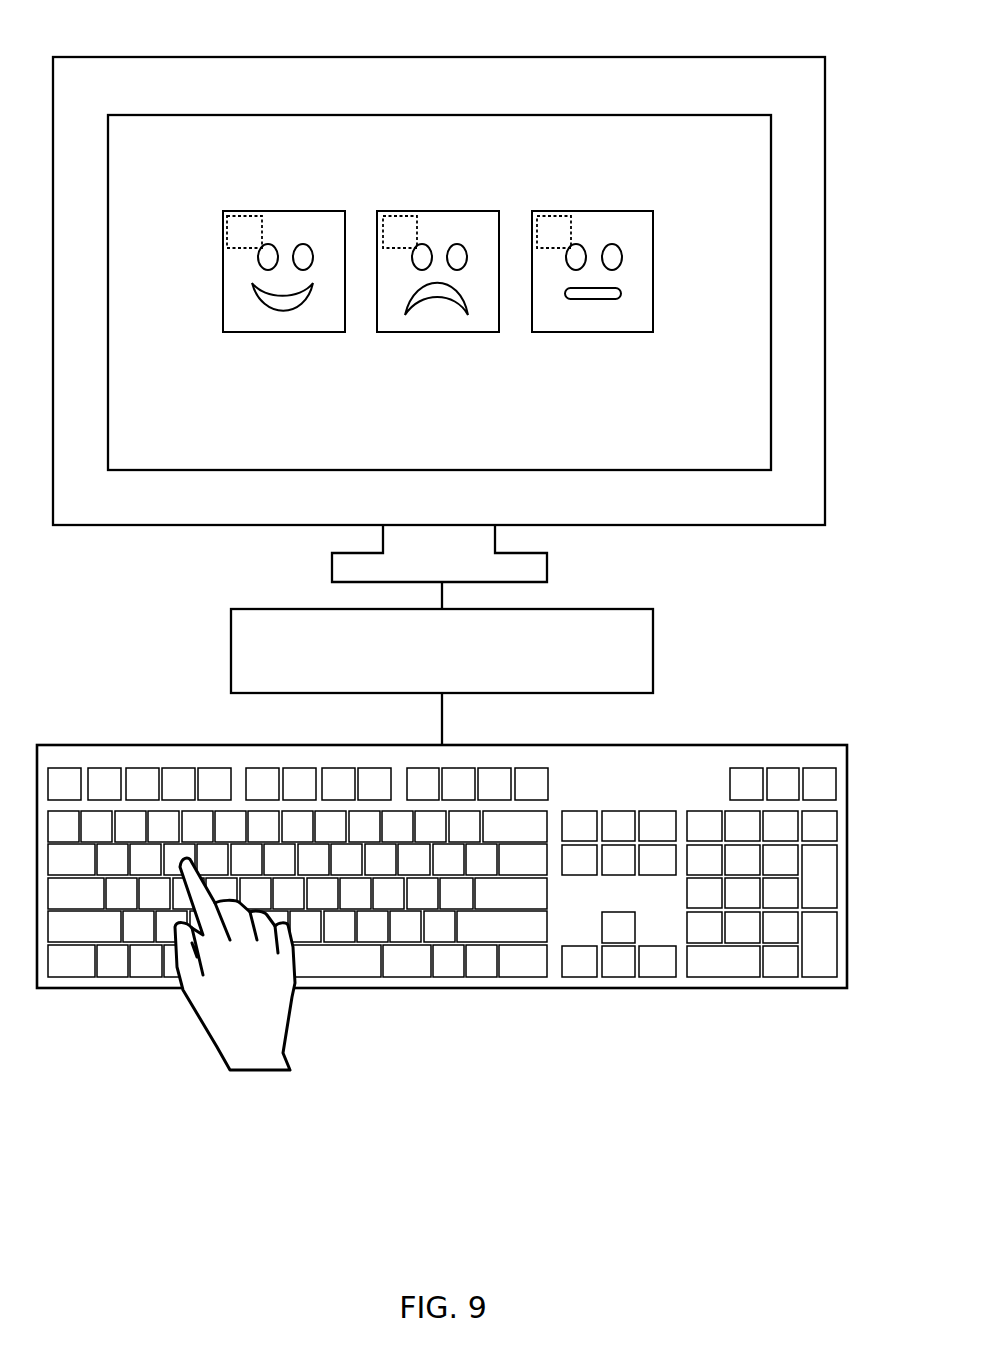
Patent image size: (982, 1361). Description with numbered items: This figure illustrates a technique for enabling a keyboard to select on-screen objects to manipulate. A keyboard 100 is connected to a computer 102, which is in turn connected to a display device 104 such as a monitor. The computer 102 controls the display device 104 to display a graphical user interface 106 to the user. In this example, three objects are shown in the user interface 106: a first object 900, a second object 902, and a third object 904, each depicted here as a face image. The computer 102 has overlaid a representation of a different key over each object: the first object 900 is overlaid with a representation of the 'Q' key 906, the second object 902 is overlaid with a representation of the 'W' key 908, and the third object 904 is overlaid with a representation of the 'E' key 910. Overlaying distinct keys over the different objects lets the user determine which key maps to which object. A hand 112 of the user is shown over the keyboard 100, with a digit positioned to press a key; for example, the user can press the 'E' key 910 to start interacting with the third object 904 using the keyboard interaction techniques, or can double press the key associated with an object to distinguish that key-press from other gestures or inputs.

The keyboard 100 is at (807, 745).
The computer 102 is at (647, 609).
The display device 104 is at (778, 57).
The graphical user interface 106 is at (165, 142).
The hand 112 is at (295, 1000).
The first object 900 is at (285, 211).
The second object 902 is at (438, 211).
The third object 904 is at (592, 211).
The representation of the 'Q' key 906 is at (245, 216).
The representation of the 'W' key 908 is at (399, 216).
The representation of the 'E' key 910 is at (553, 216).